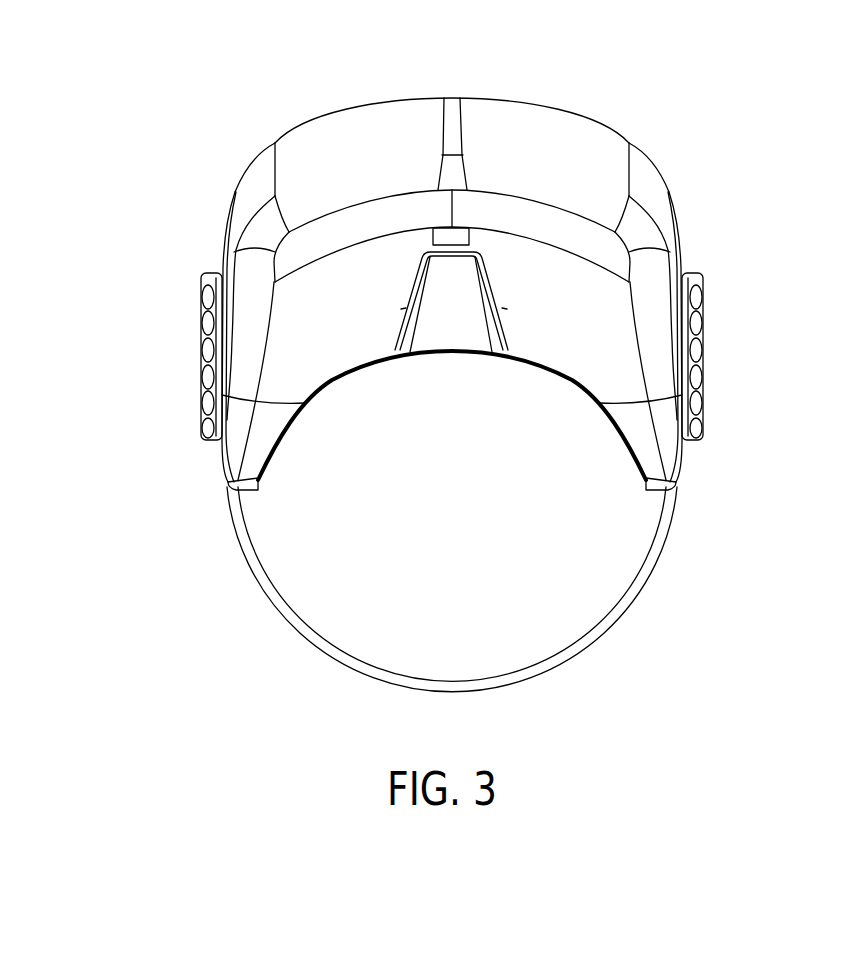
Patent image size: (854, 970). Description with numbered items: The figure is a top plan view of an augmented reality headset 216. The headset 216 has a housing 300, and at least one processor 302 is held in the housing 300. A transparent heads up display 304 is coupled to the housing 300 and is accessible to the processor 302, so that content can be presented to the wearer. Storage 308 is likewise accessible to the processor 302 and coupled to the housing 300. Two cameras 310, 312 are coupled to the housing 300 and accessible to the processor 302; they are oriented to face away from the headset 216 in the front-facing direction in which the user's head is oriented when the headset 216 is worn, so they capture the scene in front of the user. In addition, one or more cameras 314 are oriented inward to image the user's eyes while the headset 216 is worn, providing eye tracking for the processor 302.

The headset 216 is at (134, 45).
The housing 300 is at (661, 547).
The processor 302 is at (336, 248).
The transparent heads up display 304 is at (350, 110).
The storage 308 is at (548, 244).
The camera 310 is at (253, 161).
The camera 312 is at (658, 166).
The camera 314 is at (443, 253).